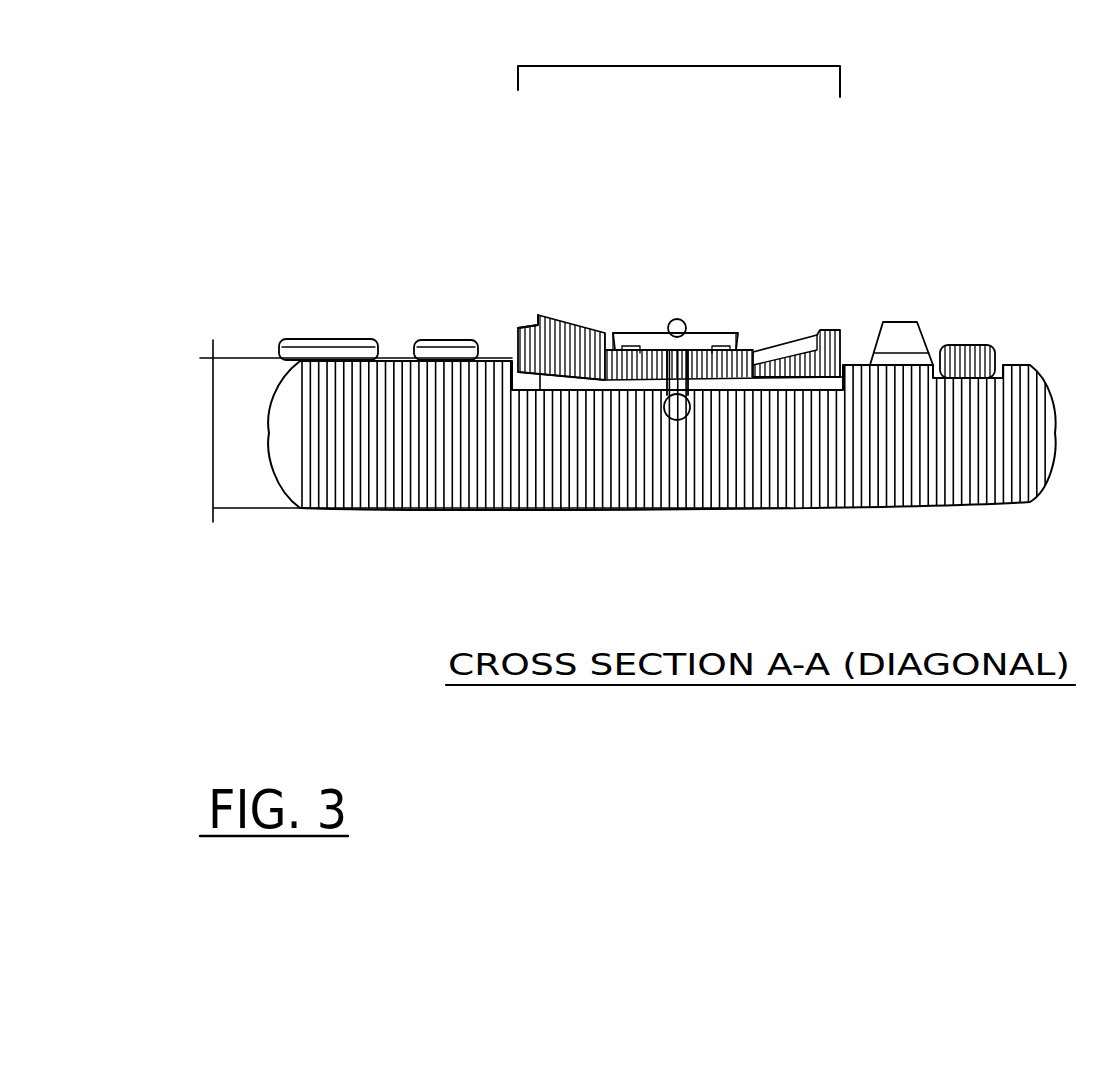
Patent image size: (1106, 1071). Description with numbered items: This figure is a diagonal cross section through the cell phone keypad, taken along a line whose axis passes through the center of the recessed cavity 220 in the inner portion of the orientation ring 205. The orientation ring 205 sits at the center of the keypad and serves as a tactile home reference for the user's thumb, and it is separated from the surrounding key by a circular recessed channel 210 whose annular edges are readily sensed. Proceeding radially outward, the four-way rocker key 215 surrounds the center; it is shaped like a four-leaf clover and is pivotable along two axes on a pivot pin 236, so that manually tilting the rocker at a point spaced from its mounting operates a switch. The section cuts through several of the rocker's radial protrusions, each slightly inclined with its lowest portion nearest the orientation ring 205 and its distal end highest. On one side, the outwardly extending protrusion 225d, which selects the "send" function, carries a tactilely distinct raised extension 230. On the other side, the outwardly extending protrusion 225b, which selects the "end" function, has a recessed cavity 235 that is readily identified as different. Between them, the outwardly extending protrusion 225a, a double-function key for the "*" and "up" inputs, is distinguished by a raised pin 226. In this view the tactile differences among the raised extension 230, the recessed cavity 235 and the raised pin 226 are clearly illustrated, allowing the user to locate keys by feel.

The orientation ring 205 is at (647, 333).
The circular recessed channel 210 is at (727, 367).
The four-way rocker key 215 is at (679, 64).
The recessed cavity 220 is at (717, 333).
The outwardly extending protrusion 225a is at (658, 333).
The outwardly extending protrusion 225b is at (817, 360).
The outwardly extending protrusion 225d is at (520, 337).
The raised pin 226 is at (675, 318).
The raised extension 230 is at (573, 327).
The recessed cavity 235 is at (813, 357).
The pivot pin 236 is at (688, 415).